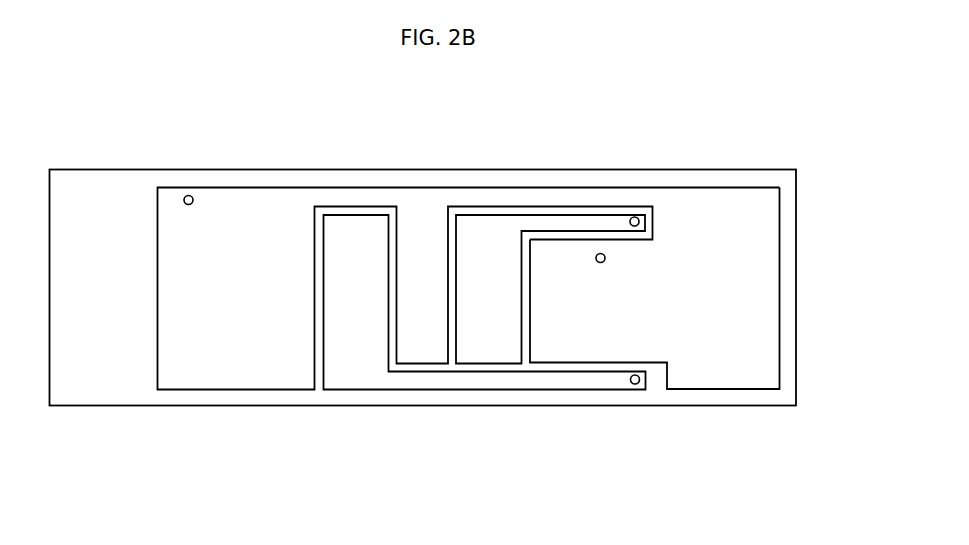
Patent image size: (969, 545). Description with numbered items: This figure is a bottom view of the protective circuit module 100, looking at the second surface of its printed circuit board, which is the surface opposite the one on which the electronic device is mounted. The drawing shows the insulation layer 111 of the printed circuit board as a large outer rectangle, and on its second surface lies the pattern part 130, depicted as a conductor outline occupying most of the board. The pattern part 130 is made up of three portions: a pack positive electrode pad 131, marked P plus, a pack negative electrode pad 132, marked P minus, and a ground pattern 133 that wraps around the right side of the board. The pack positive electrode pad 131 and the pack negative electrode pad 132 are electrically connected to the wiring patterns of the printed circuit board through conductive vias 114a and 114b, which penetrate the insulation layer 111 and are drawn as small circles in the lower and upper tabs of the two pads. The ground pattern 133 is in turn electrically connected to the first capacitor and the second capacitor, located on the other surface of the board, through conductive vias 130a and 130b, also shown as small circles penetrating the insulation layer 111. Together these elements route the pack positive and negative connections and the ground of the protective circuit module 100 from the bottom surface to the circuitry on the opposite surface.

The protective circuit module 100 is at (832, 126).
The insulation layer 111 is at (790, 226).
The pattern part 130 is at (512, 311).
The conductive via 130a is at (187, 196).
The conductive via 130b is at (596, 258).
The conductive via 114a is at (634, 385).
The conductive via 114b is at (634, 216).
The pack positive electrode pad 131 is at (354, 380).
The pack negative electrode pad 132 is at (476, 356).
The ground pattern 133 is at (736, 372).